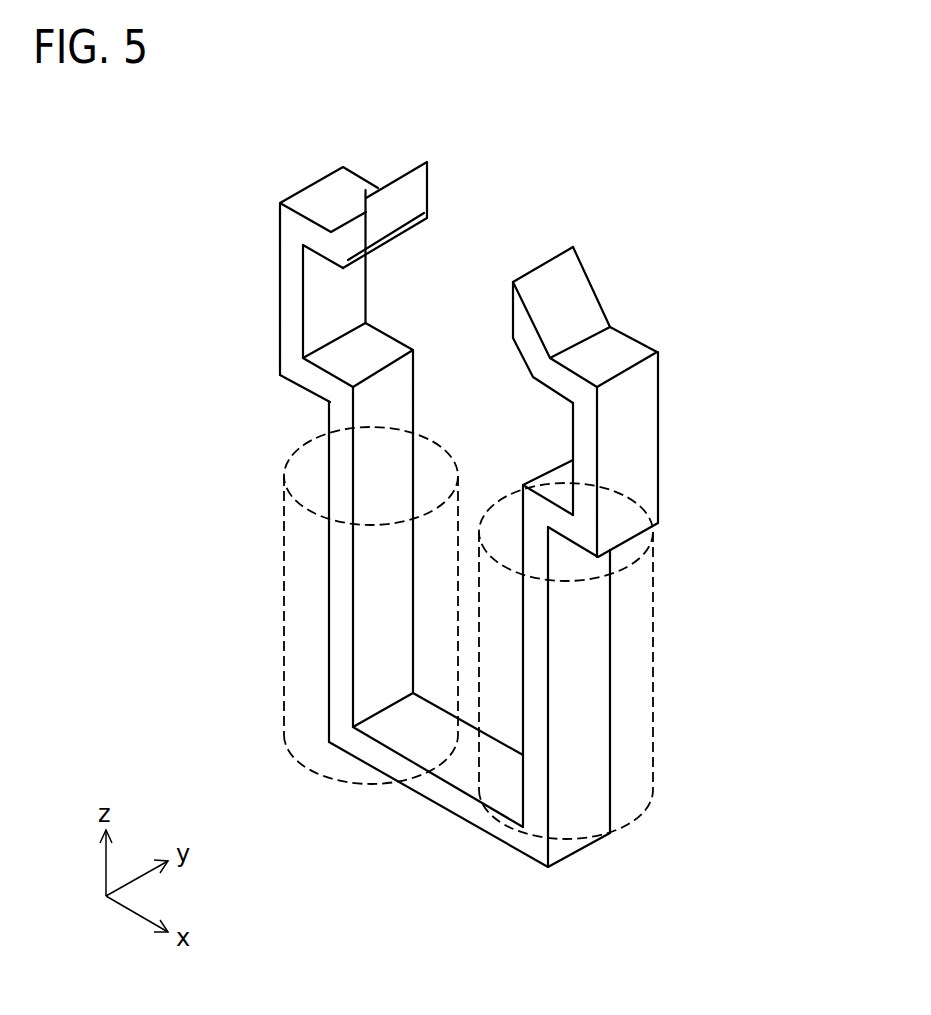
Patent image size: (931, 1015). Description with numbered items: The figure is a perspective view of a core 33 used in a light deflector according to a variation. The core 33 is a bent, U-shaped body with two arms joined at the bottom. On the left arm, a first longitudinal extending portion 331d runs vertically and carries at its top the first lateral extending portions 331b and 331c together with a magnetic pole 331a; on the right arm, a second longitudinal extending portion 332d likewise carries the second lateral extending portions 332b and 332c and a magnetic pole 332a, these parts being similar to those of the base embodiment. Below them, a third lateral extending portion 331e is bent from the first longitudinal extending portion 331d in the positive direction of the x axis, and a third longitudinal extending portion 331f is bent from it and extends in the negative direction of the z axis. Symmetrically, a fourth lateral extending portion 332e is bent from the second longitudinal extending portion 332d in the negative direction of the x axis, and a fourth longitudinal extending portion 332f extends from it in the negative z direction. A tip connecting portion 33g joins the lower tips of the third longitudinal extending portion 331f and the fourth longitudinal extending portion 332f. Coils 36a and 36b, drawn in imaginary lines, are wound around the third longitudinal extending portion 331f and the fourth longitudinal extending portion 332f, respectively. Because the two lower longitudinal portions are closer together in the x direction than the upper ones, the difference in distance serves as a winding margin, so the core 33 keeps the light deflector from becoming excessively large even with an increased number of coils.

The core 33 is at (690, 115).
The magnetic pole 331a is at (413, 198).
The first lateral extending portion 331b is at (341, 232).
The first lateral extending portion 331c is at (313, 200).
The first longitudinal extending portion 331d is at (293, 298).
The third lateral extending portion 331e is at (312, 385).
The third longitudinal extending portion 331f is at (338, 697).
The magnetic pole 332a is at (538, 263).
The second lateral extending portion 332b is at (570, 293).
The second lateral extending portion 332c is at (613, 352).
The second longitudinal extending portion 332d is at (648, 428).
The fourth lateral extending portion 332e is at (561, 532).
The fourth longitudinal extending portion 332f is at (597, 722).
The tip connecting portion 33g is at (440, 793).
The coil 36a is at (285, 567).
The coil 36b is at (656, 604).